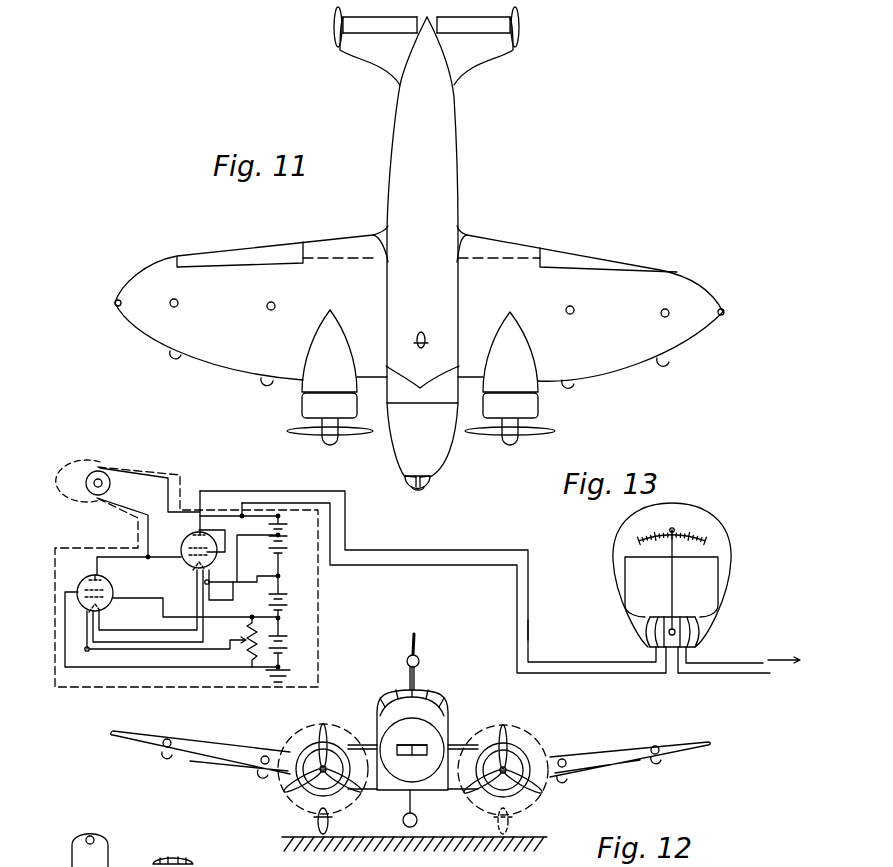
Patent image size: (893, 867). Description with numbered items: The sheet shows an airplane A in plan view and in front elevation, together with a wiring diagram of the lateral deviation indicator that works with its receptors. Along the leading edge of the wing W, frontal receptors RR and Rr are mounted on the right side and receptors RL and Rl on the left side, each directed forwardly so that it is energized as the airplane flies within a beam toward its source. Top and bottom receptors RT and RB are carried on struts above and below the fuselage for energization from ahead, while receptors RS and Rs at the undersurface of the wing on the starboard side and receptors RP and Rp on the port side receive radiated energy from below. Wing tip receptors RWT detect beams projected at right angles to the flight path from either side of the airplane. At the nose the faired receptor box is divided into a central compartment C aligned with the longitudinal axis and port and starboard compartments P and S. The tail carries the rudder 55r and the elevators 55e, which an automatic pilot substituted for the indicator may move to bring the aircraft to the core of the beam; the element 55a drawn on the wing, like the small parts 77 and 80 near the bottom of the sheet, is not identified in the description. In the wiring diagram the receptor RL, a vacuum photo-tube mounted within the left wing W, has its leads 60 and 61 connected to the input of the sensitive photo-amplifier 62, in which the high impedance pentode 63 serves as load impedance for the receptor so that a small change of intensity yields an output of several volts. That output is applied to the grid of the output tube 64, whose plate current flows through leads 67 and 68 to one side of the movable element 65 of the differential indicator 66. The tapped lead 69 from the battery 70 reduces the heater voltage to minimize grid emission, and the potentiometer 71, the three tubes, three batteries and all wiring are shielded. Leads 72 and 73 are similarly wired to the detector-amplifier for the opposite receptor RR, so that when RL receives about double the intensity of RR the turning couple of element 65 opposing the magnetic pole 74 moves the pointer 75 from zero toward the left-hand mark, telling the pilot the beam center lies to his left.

In FIG. 11, the rudder 55r is at (334, 20).
In FIG. 11, the elevators 55e is at (377, 30).
In FIG. 11, the aileron 55a is at (585, 263).
In FIG. 11, the airplane A is at (426, 274).
In FIG. 11, the wing W is at (592, 359).
In FIG. 13, the wing W is at (150, 478).
In FIG. 11, the wing tip receptors RWT is at (115, 304).
In FIG. 11, the receptor RS is at (178, 301).
In FIG. 12, the receptor RS is at (166, 758).
In FIG. 11, the receptor Rs is at (276, 303).
In FIG. 12, the receptor Rs is at (262, 777).
In FIG. 11, the frontal receptor RR is at (174, 357).
In FIG. 12, the frontal receptor RR is at (170, 740).
In FIG. 11, the frontal receptor Rr is at (265, 382).
In FIG. 12, the frontal receptor Rr is at (268, 756).
In FIG. 11, the receptor Rp is at (567, 306).
In FIG. 12, the receptor Rp is at (564, 781).
In FIG. 11, the receptor RP is at (667, 309).
In FIG. 12, the receptor RP is at (657, 763).
In FIG. 11, the frontal receptor Rl is at (570, 385).
In FIG. 12, the frontal receptor Rl is at (565, 760).
In FIG. 11, the frontal receptor RL is at (665, 364).
In FIG. 13, the frontal receptor RL is at (93, 470).
In FIG. 12, the frontal receptor RL is at (655, 746).
In FIG. 11, the top receptor RT is at (425, 346).
In FIG. 12, the top receptor RT is at (420, 659).
In FIG. 12, the bottom receptor RB is at (418, 820).
In FIG. 11, the starboard compartment S is at (405, 478).
In FIG. 12, the starboard compartment S is at (405, 755).
In FIG. 11, the port compartment P is at (430, 478).
In FIG. 12, the port compartment P is at (417, 755).
In FIG. 11, the central compartment C is at (418, 490).
In FIG. 12, the central compartment C is at (413, 745).
In FIG. 13, the lead 60 is at (105, 500).
In FIG. 13, the lead 61 is at (172, 492).
In FIG. 13, the photo-amplifier 62 is at (168, 591).
In FIG. 13, the pentode 63 is at (109, 605).
In FIG. 13, the output tube 64 is at (188, 549).
In FIG. 13, the movable element 65 is at (684, 617).
In FIG. 13, the differential indicator 66 is at (618, 575).
In FIG. 13, the lead 67 is at (517, 618).
In FIG. 13, the lead 68 is at (528, 628).
In FIG. 13, the tapped lead 69 is at (237, 568).
In FIG. 13, the battery 70 is at (290, 599).
In FIG. 13, the potentiometer 71 is at (238, 640).
In FIG. 13, the lead 72 is at (741, 663).
In FIG. 13, the lead 73 is at (758, 675).
In FIG. 13, the magnetic pole 74 is at (632, 628).
In FIG. 13, the pointer 75 is at (671, 585).
In FIG. 12, the dome unit 77 is at (193, 860).
In FIG. 12, the tag unit 80 is at (70, 850).